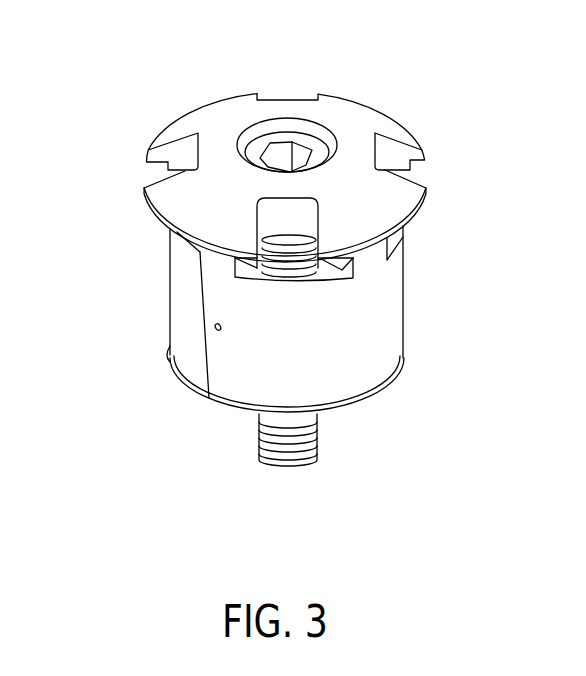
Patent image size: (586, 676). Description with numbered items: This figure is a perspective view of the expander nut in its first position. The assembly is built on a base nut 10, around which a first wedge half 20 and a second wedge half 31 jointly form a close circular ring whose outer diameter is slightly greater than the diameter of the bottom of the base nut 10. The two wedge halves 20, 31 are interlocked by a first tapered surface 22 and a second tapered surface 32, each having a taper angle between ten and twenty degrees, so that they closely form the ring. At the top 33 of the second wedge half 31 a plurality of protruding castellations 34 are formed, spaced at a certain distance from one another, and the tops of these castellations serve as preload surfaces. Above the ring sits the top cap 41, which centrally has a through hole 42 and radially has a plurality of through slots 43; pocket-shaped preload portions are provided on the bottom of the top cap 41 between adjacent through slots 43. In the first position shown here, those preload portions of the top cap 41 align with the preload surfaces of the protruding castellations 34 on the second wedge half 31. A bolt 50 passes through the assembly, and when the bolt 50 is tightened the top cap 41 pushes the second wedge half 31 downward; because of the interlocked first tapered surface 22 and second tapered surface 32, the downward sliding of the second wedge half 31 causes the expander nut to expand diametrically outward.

The base nut 10 is at (217, 414).
The first wedge half 20 is at (145, 266).
The first tapered surface 22 is at (170, 356).
The second wedge half 31 is at (378, 358).
The second tapered surface 32 is at (208, 369).
The top 33 is at (324, 280).
The protruding castellations 34 is at (372, 257).
The top cap 41 is at (357, 91).
The through hole 42 is at (288, 106).
The through slots 43 is at (420, 172).
The bolt 50 is at (316, 428).